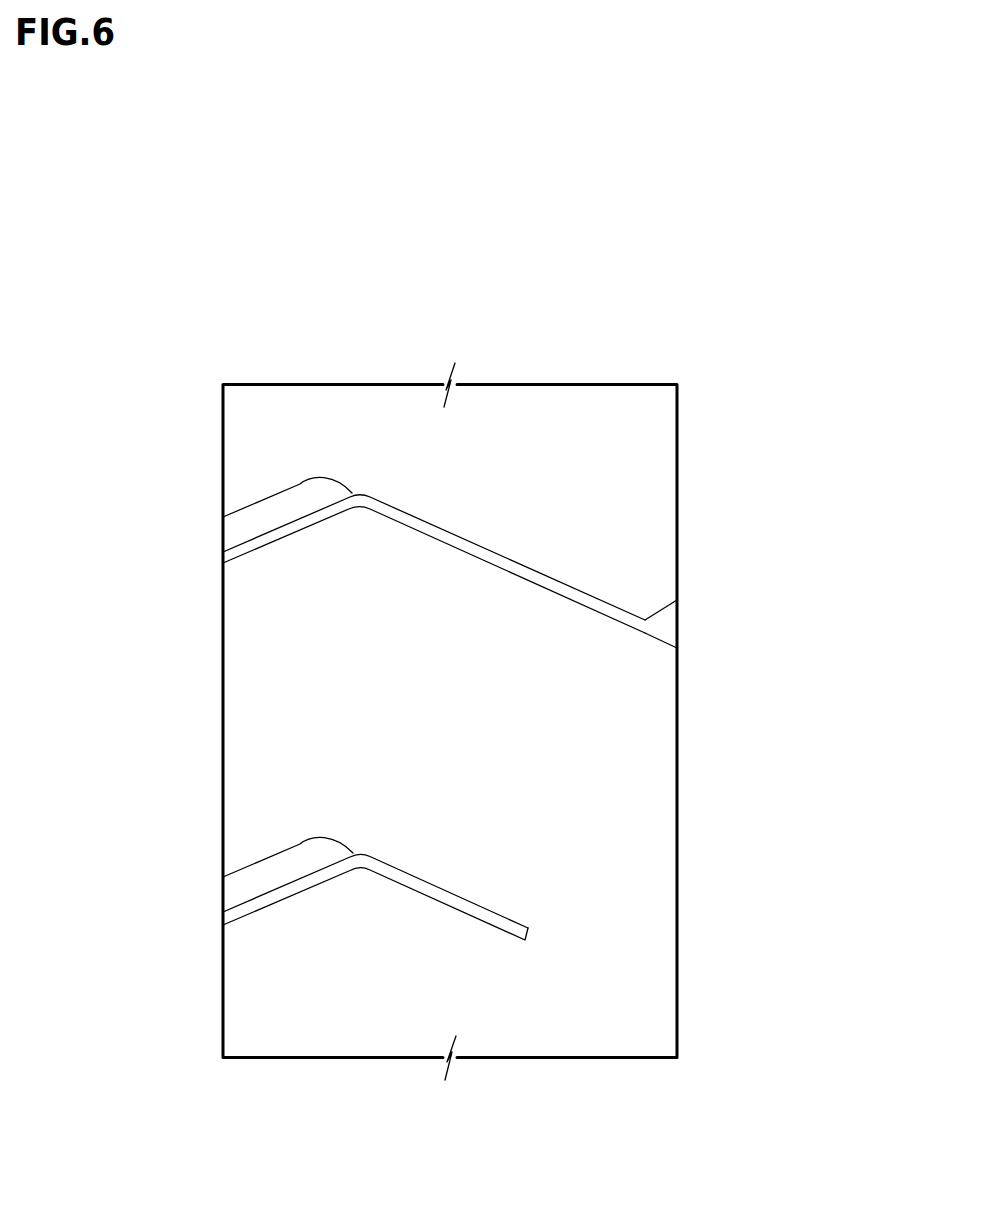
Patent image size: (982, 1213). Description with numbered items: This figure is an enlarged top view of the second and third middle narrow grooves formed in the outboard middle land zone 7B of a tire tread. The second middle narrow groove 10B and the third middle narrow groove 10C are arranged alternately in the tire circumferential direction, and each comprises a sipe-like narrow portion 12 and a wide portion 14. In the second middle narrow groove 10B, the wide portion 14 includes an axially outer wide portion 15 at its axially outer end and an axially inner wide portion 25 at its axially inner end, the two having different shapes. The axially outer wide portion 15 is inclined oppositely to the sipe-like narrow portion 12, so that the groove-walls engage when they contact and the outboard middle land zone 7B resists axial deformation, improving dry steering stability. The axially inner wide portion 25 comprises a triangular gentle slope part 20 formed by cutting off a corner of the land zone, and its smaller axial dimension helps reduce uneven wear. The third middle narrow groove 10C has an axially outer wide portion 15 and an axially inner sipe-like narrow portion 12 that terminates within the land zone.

The outboard middle land zone 7B is at (366, 442).
The second middle narrow groove 10B is at (492, 555).
The third middle narrow groove 10C is at (468, 905).
The sipe-like narrow portion 12 is at (557, 587).
The wide portion 14 is at (460, 580).
The axially outer wide portion 15 is at (288, 677).
The axially inner wide portion 25 is at (661, 610).
The gentle slope part 20 is at (668, 626).